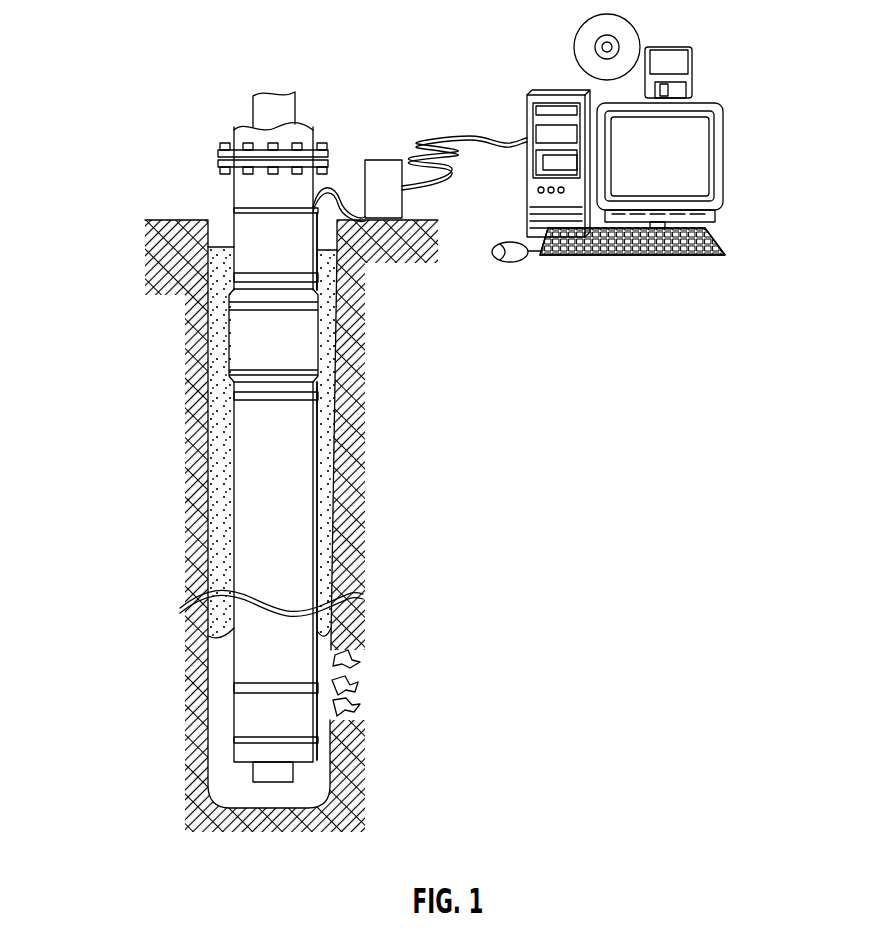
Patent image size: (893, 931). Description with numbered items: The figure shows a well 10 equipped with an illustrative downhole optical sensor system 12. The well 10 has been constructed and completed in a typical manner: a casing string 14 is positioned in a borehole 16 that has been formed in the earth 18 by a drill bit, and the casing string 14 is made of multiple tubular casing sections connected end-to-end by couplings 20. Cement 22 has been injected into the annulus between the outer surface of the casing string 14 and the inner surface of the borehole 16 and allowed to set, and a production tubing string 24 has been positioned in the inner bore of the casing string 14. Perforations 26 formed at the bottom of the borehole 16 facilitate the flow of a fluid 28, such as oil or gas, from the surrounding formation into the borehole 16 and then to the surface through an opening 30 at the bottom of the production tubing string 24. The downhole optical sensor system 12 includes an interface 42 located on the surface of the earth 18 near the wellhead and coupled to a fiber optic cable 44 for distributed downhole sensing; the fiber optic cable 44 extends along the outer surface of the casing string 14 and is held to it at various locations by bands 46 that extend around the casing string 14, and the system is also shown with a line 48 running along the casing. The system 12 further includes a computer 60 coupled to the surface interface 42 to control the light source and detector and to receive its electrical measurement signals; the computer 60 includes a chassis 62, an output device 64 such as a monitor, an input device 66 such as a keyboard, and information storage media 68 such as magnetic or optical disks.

The well 10 is at (298, 68).
The downhole optical sensor system 12 is at (445, 69).
The casing string 14 is at (232, 180).
The borehole 16 is at (222, 210).
The earth 18 is at (161, 270).
The couplings 20 is at (240, 328).
The cement 22 is at (358, 513).
The production tubing string 24 is at (262, 110).
The perforations 26 is at (365, 643).
The fluid 28 is at (326, 709).
The opening 30 is at (262, 786).
The interface 42 is at (402, 210).
The fiber optic cable 44 is at (334, 193).
The bands 46 is at (280, 215).
The sensor cable 48 is at (319, 345).
The computer 60 is at (638, 132).
The chassis 62 is at (545, 95).
The output device 64 is at (725, 160).
The input device 66 is at (722, 240).
The information storage media 68 is at (575, 33).